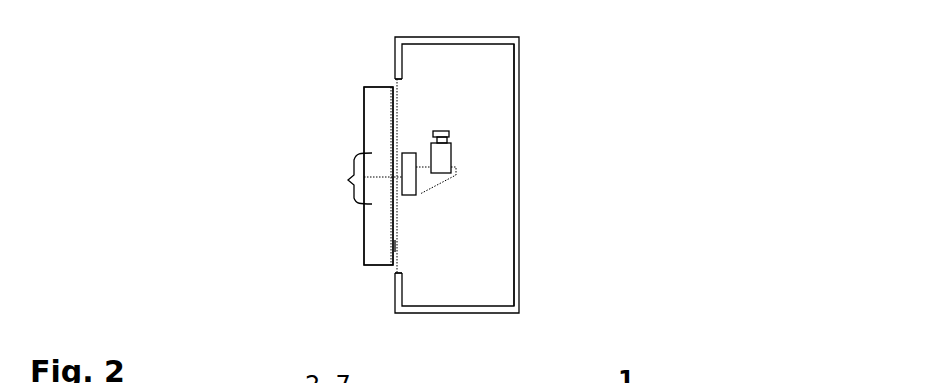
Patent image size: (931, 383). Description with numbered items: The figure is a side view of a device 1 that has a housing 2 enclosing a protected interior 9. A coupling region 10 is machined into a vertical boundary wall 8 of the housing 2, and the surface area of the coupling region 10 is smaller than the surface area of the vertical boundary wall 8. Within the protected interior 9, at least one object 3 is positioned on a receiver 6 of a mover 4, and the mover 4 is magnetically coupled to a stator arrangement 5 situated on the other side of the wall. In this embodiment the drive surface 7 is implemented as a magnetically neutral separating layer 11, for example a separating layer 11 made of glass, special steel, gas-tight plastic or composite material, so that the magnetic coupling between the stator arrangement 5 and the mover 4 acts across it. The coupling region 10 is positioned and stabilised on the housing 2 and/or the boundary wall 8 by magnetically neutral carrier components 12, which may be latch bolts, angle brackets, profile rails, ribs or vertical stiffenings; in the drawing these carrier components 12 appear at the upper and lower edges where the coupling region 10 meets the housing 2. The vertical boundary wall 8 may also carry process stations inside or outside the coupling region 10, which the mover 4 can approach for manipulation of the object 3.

The device 1 is at (321, 67).
The housing 2 is at (515, 41).
The object 3 is at (438, 151).
The mover 4 is at (403, 162).
The stator arrangement 5 is at (348, 180).
The receiver 6 is at (426, 180).
The drive surface 7 is at (399, 113).
The vertical boundary wall 8 is at (514, 101).
The protected interior 9 is at (474, 175).
The coupling region 10 is at (398, 246).
The separating layer 11 is at (378, 176).
The carrier components 12 is at (379, 71).